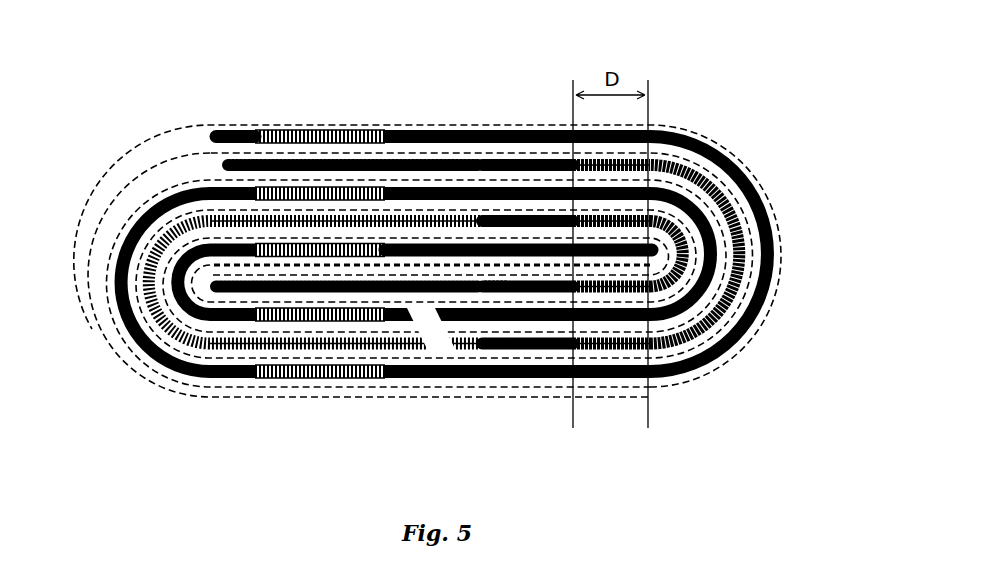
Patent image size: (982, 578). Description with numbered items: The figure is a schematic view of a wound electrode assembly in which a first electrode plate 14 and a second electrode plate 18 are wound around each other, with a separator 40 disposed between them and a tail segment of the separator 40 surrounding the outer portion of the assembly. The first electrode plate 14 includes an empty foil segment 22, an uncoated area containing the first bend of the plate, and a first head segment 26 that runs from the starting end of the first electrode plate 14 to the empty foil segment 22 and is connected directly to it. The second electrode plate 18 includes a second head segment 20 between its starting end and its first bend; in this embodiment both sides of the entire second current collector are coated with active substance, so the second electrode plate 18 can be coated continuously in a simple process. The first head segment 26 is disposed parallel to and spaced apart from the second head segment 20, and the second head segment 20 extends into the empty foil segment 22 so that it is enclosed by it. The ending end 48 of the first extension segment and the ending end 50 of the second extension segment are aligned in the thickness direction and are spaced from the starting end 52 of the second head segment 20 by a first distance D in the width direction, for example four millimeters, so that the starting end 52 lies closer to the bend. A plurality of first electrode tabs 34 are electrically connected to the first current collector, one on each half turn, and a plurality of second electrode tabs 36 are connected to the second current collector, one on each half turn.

The first electrode plate 14 is at (449, 261).
The second electrode plate 18 is at (453, 226).
The second head segment 20 is at (603, 250).
The empty foil segment 22 is at (680, 243).
The first head segment 26 is at (355, 295).
The first electrode tab 34 is at (495, 343).
The second electrode tab 36 is at (296, 126).
The separator 40 is at (223, 396).
The ending end of the first extension segment 48 is at (572, 292).
The ending end of the second extension segment 50 is at (572, 217).
The starting end of the second head segment 52 is at (613, 253).